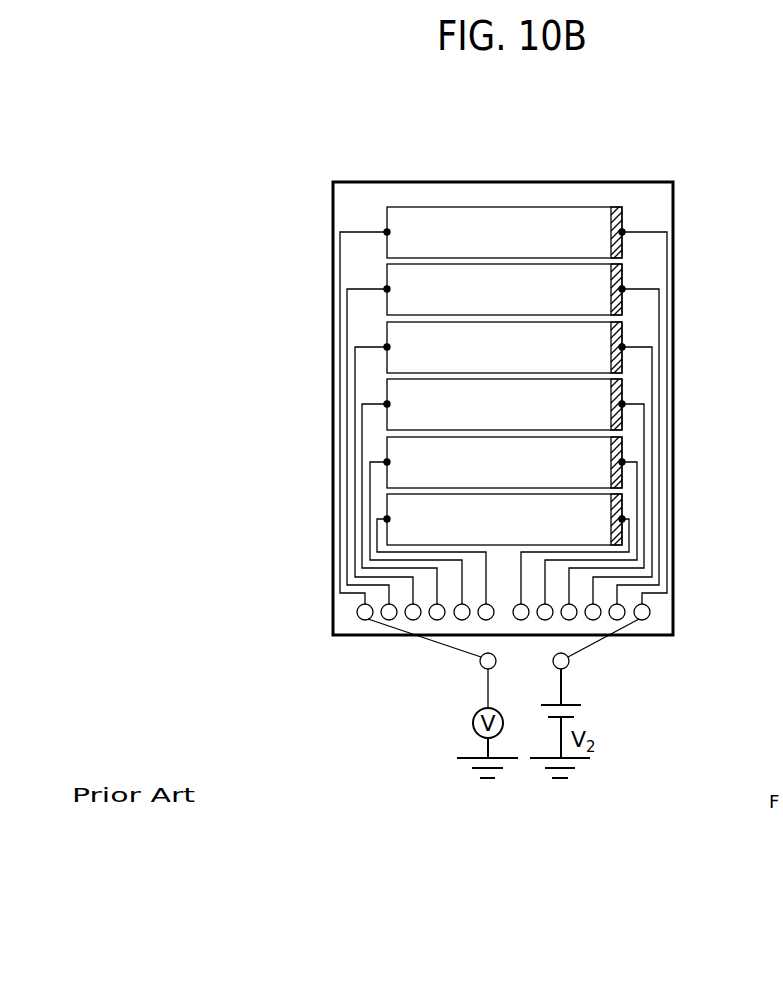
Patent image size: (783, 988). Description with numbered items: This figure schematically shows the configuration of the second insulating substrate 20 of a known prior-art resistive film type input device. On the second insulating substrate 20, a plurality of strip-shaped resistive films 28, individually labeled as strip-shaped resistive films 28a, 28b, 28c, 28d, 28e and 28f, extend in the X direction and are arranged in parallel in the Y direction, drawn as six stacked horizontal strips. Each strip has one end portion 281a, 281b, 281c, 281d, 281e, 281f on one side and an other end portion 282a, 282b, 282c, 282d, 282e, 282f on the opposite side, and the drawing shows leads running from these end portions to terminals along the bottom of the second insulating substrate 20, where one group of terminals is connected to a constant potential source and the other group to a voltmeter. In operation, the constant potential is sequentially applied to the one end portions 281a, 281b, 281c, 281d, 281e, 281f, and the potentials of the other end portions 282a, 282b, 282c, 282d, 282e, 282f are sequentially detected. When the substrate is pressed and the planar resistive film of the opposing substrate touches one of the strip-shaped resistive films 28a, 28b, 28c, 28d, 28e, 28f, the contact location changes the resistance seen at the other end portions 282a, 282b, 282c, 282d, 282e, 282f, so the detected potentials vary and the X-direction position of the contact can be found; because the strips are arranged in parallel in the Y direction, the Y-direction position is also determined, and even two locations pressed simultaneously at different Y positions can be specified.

The second insulating substrate 20 is at (543, 181).
The strip-shaped resistive films 28 is at (504, 317).
The strip-shaped resistive film 28a is at (477, 247).
The strip-shaped resistive film 28b is at (477, 304).
The strip-shaped resistive film 28c is at (477, 362).
The strip-shaped resistive film 28d is at (477, 419).
The strip-shaped resistive film 28e is at (477, 477).
The strip-shaped resistive film 28f is at (477, 534).
The one end portion 281a is at (625, 245).
The one end portion 281b is at (625, 302).
The one end portion 281c is at (625, 360).
The one end portion 281d is at (625, 417).
The one end portion 281e is at (625, 475).
The one end portion 281f is at (625, 532).
The other end portion 282a is at (385, 245).
The other end portion 282b is at (385, 302).
The other end portion 282c is at (385, 360).
The other end portion 282d is at (385, 417).
The other end portion 282e is at (385, 475).
The other end portion 282f is at (385, 532).